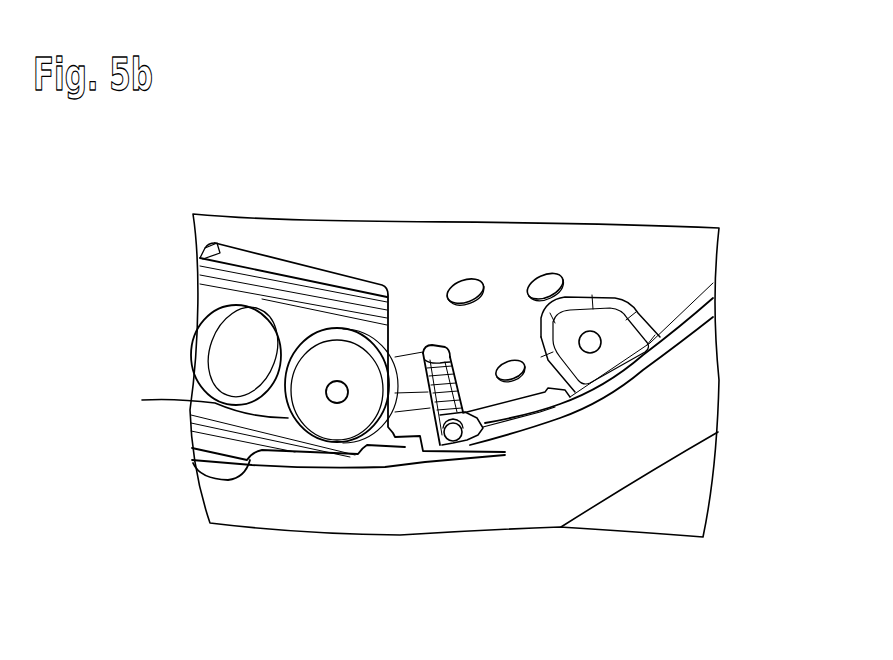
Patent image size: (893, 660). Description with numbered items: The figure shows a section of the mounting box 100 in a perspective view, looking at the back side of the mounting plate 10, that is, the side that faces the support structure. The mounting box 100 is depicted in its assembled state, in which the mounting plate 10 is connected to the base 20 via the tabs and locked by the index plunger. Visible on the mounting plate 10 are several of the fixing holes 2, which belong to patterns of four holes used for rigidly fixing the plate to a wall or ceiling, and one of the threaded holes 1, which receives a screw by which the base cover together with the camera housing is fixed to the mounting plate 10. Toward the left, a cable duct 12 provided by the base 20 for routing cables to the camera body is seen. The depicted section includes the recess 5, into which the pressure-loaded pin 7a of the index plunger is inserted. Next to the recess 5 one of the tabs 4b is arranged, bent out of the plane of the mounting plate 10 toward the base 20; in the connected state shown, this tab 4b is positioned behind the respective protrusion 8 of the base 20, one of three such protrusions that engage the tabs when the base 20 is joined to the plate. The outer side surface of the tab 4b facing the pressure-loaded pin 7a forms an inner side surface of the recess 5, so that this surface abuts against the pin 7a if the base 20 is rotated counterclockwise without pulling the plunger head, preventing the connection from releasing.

The threaded hole 1 is at (590, 331).
The fixing hole 2 is at (504, 362).
The recess 5 is at (431, 345).
The pressure-loaded pin 7a is at (458, 442).
The tab 4b is at (412, 421).
The protrusion 8 is at (390, 447).
The mounting plate 10 is at (666, 247).
The cable duct 12 is at (303, 409).
The base 20 is at (700, 384).
The mounting box 100 is at (172, 350).